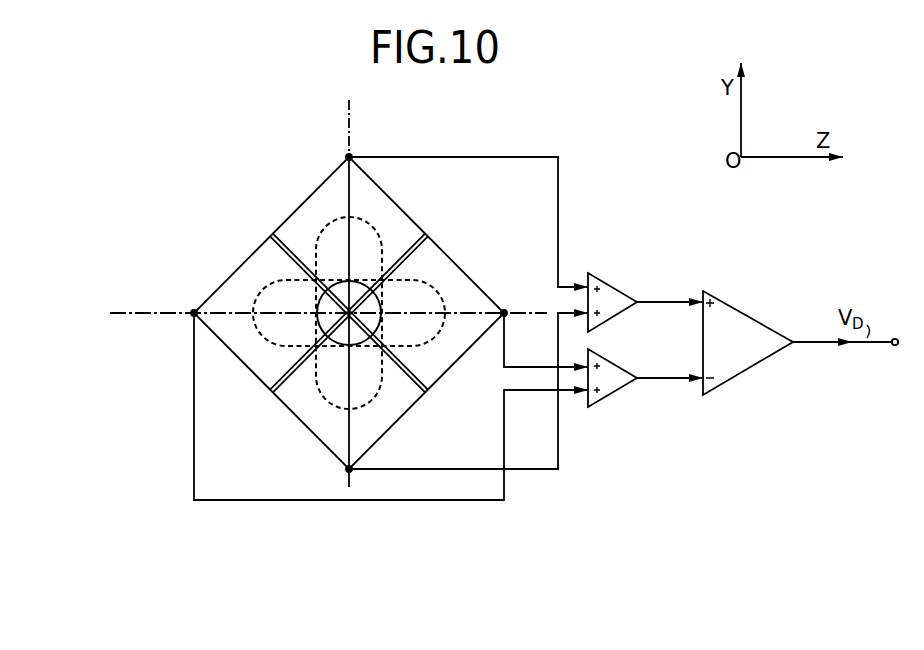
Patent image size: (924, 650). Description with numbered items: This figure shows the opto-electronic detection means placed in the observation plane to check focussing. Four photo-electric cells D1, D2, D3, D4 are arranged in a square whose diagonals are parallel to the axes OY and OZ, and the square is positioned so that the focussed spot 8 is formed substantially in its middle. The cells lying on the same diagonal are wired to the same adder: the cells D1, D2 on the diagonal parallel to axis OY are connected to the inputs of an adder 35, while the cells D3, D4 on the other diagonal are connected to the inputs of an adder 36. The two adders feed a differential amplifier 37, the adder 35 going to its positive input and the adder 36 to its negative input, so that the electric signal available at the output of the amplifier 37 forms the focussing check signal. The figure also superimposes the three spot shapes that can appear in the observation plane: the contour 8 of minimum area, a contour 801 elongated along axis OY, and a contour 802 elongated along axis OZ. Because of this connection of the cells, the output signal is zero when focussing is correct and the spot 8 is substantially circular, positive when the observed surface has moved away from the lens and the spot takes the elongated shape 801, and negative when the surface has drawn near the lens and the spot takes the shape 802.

The photo-electric cell D1 is at (313, 212).
The photo-electric cell D2 is at (305, 402).
The photo-electric cell D3 is at (260, 267).
The photo-electric cell D4 is at (435, 363).
The focussed spot 8 is at (368, 280).
The contour elongated along axis OY 801 is at (373, 228).
The contour elongated along axis OZ 802 is at (435, 292).
The adder 35 is at (612, 286).
The adder 36 is at (605, 397).
The differential amplifier 37 is at (752, 313).